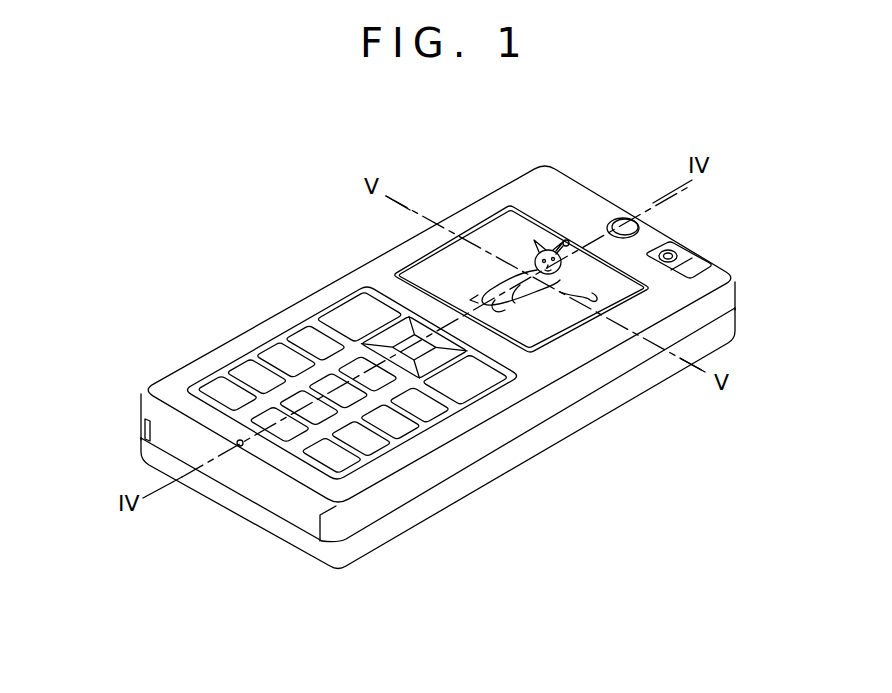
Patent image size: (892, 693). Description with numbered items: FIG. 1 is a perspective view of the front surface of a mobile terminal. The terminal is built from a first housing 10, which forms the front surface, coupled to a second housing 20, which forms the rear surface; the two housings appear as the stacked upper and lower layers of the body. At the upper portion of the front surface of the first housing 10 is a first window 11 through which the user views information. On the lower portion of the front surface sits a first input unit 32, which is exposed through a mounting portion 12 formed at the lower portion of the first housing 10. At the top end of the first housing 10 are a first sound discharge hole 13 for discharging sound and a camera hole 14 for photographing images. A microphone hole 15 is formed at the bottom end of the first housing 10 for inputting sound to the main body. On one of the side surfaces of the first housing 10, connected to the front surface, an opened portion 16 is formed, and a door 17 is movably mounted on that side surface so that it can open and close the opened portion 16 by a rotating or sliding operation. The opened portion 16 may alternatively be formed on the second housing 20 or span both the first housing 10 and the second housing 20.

The first housing 10 is at (583, 388).
The second housing 20 is at (547, 435).
The first window 11 is at (500, 237).
The mounting portion 12 is at (200, 397).
The first input unit 32 is at (302, 342).
The first sound discharge hole 13 is at (640, 226).
The camera hole 14 is at (680, 252).
The microphone hole 15 is at (238, 445).
The opened portion 16 is at (310, 530).
The door 17 is at (293, 512).